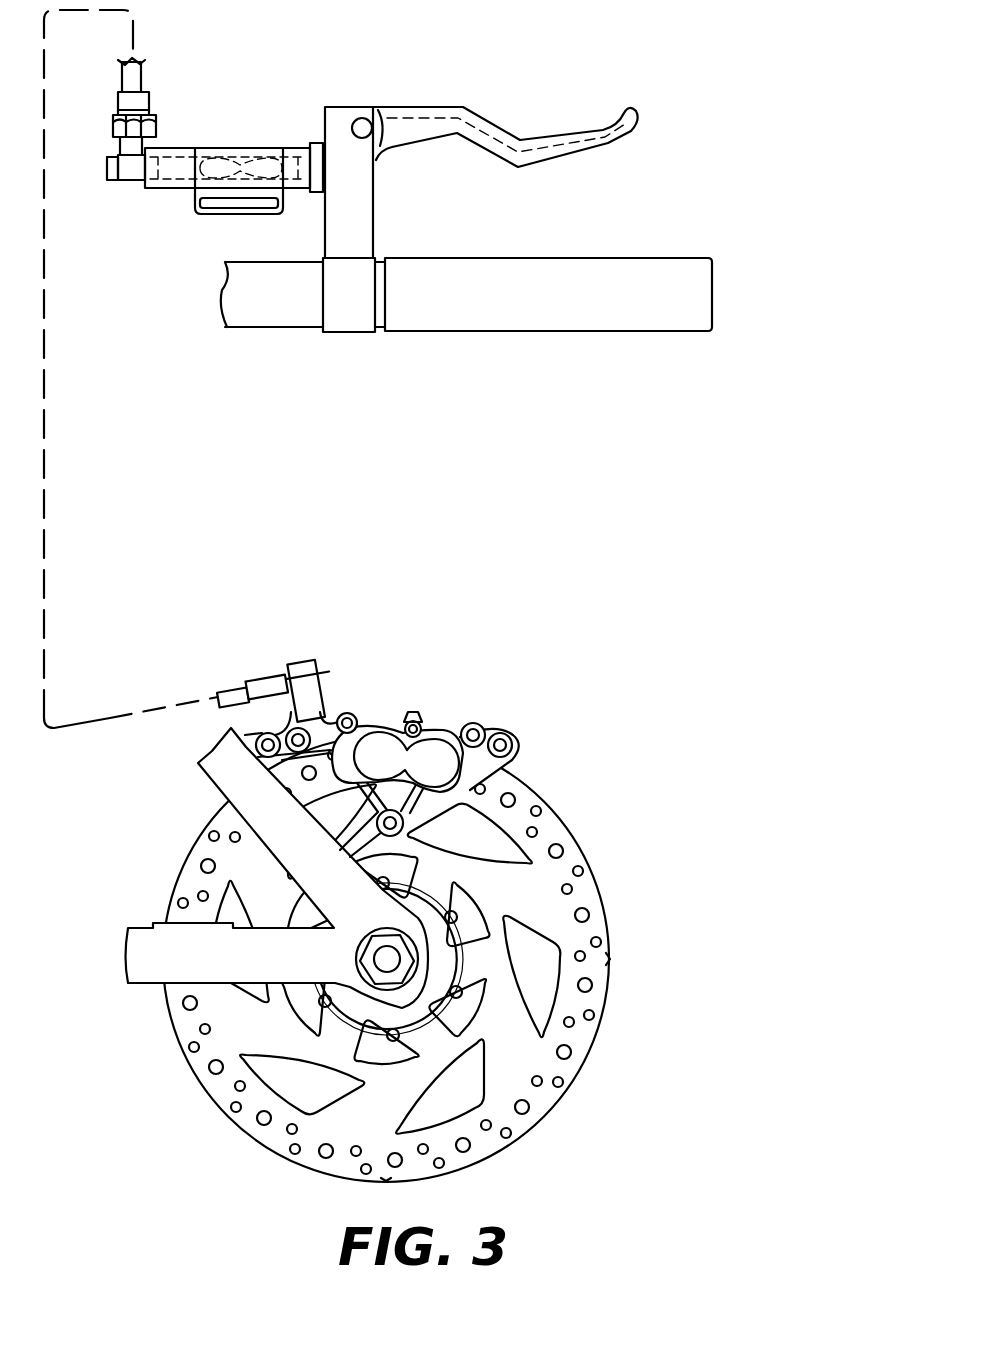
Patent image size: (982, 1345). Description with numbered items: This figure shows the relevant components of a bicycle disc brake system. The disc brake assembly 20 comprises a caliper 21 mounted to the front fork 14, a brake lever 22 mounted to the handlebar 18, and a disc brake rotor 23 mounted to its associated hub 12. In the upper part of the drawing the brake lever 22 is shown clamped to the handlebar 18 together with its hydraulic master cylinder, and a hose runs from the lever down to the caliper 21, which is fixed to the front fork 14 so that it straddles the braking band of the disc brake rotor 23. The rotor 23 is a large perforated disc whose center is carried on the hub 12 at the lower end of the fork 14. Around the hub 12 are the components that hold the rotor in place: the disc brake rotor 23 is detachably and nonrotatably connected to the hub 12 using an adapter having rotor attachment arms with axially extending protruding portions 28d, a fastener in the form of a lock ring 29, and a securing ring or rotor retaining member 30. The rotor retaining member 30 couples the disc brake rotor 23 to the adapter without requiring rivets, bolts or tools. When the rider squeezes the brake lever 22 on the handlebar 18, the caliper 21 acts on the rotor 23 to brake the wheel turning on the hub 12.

The hub 12 is at (384, 985).
The front fork or frame 14 is at (210, 787).
The handlebar 18 is at (262, 328).
The front disc brake assembly 20 is at (406, 916).
The caliper 21 is at (447, 730).
The brake lever 22 is at (440, 103).
The disc brake rotor 23 is at (559, 823).
The axially extending protruding portion 28d is at (440, 993).
The lock ring 29 is at (437, 956).
The rotor retaining member 30 is at (434, 1022).